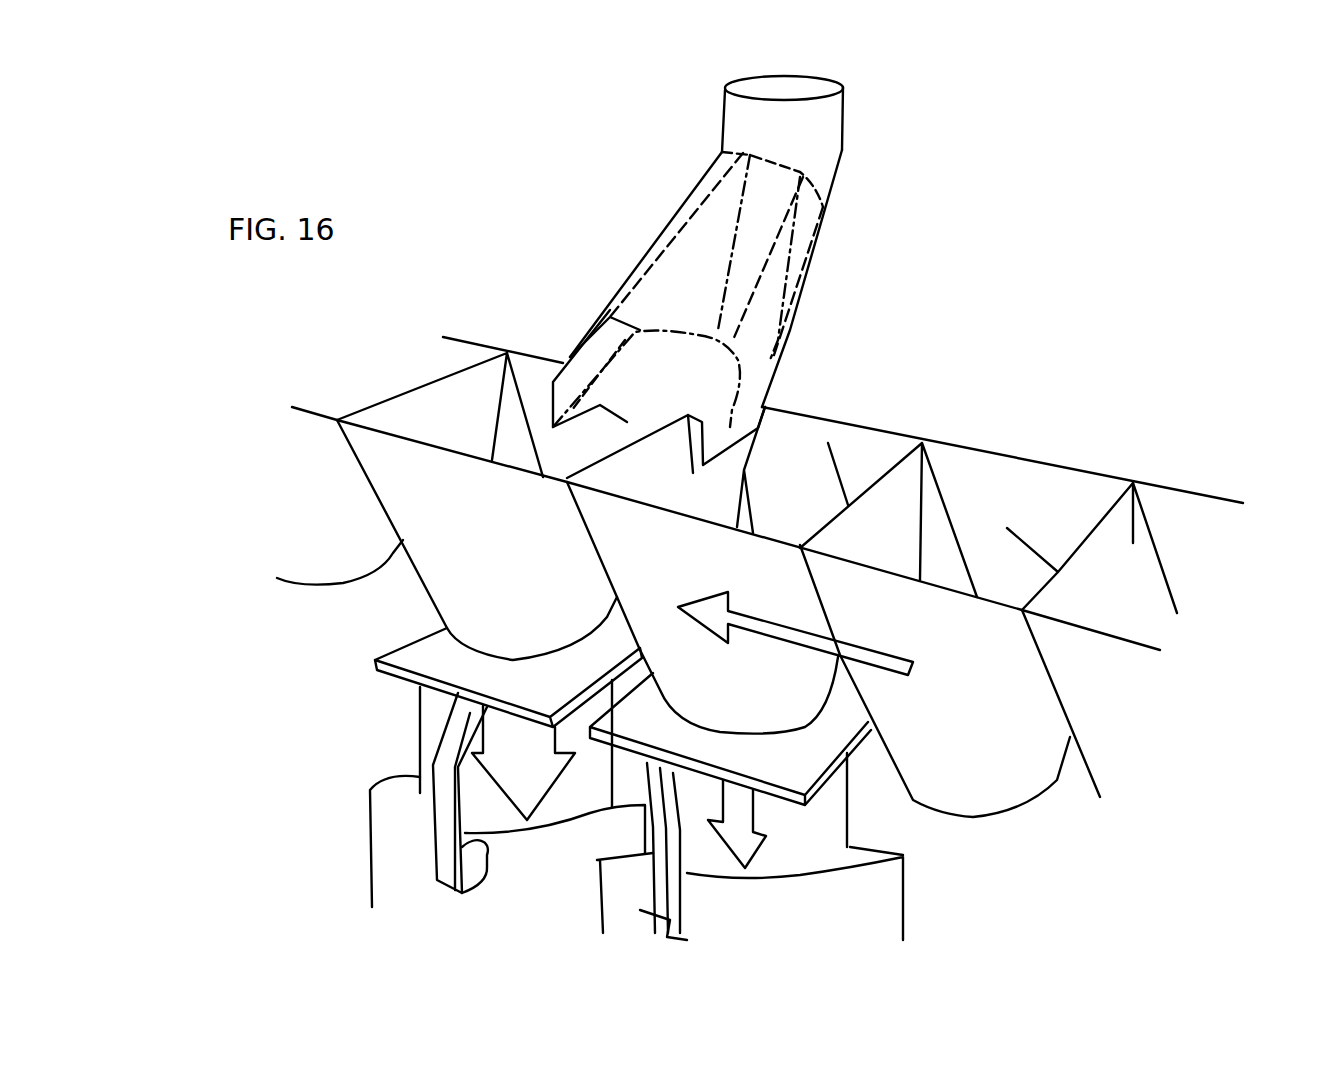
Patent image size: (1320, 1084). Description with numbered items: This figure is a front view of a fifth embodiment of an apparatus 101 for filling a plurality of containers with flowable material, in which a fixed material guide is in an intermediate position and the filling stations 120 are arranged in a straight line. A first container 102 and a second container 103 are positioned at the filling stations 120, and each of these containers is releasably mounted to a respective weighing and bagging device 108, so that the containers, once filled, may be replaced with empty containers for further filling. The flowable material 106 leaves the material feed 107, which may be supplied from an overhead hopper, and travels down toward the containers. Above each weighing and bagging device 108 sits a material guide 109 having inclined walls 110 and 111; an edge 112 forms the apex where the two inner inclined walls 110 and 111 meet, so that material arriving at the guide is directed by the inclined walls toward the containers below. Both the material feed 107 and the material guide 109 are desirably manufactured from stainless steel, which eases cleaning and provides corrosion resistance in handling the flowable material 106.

The apparatus 101 is at (340, 537).
The first container 102 is at (387, 817).
The second container 103 is at (857, 927).
The flowable material 106 is at (628, 422).
The material feed 107 is at (792, 153).
The weighing and bagging device 108 is at (447, 873).
The material guide 109 is at (962, 703).
The inclined wall 110 is at (1007, 528).
The inclined wall 111 is at (1103, 587).
The edge 112 is at (828, 443).
The filling station 120 is at (427, 747).